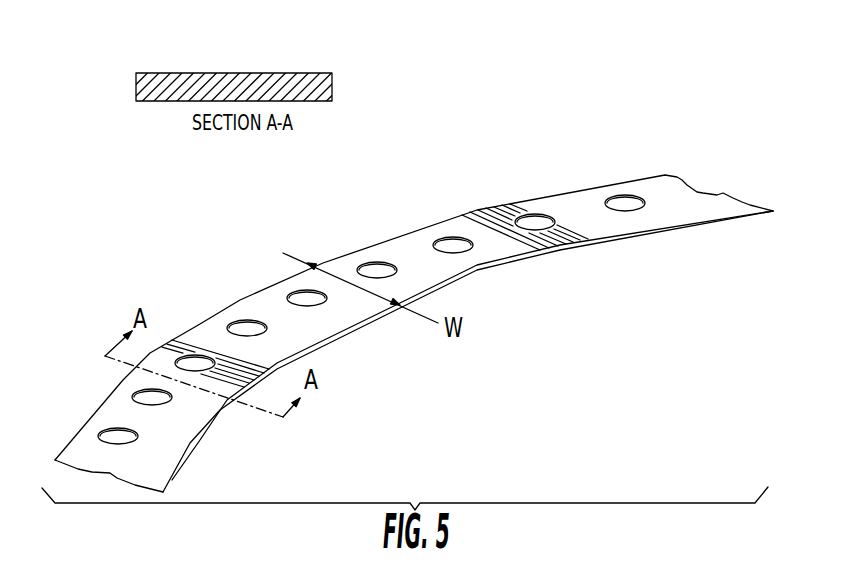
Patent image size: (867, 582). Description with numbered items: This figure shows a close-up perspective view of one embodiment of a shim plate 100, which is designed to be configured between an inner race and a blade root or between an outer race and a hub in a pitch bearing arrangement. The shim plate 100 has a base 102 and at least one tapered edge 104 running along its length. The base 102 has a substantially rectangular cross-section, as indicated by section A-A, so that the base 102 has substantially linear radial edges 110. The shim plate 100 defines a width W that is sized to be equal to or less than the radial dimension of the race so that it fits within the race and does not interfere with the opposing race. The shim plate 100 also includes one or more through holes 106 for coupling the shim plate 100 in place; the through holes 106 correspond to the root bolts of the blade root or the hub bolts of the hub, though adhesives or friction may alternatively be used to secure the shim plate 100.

The shim plate 100 is at (148, 275).
The base 102 is at (257, 303).
The tapered edge 104 is at (197, 440).
The through holes 106 is at (377, 268).
The radial edges 110 is at (263, 72).